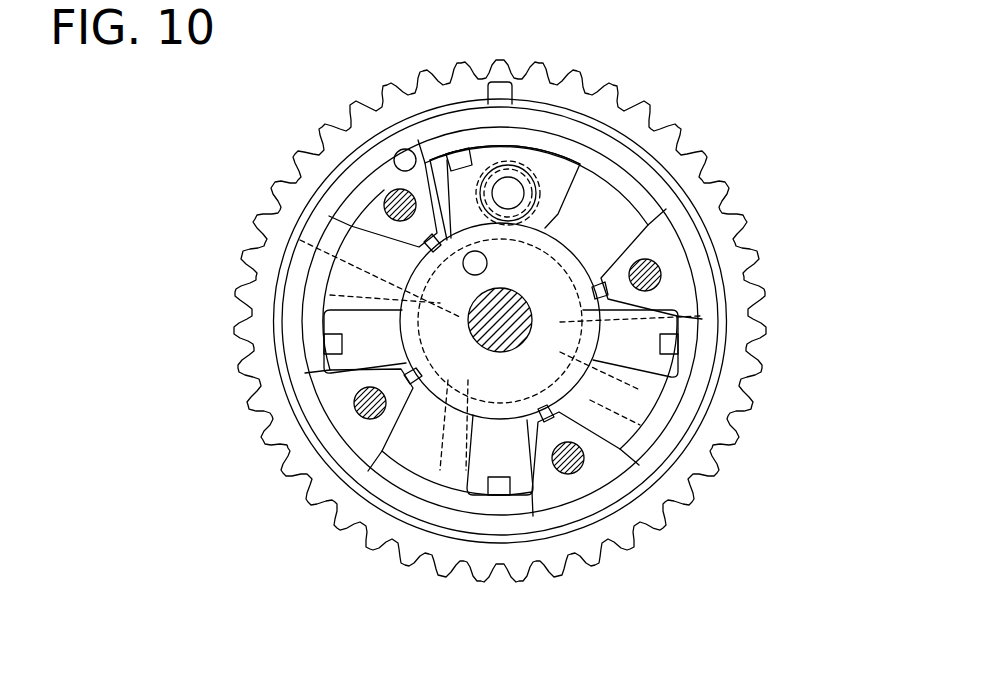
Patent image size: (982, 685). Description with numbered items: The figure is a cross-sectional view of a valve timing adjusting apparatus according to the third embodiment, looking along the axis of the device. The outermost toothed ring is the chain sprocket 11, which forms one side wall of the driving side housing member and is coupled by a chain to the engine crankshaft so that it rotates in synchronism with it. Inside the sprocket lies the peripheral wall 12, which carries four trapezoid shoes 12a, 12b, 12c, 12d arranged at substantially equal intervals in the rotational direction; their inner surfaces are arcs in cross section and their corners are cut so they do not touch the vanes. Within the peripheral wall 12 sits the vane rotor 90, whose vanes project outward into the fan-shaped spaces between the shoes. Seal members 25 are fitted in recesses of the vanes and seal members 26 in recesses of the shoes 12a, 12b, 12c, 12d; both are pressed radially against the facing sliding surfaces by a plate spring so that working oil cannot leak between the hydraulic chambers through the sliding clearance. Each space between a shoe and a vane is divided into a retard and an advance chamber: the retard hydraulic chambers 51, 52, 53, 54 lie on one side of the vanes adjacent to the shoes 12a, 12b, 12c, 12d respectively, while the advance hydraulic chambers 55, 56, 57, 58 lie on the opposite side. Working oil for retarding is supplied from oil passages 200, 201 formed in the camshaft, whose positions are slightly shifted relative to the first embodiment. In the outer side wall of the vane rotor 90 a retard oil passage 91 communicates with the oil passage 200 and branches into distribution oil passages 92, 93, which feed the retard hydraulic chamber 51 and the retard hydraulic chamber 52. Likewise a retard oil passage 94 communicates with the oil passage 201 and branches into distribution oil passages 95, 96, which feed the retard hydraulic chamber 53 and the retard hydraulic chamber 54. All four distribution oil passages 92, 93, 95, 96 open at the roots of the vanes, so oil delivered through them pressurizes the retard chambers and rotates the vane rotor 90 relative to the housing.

The chain sprocket 11 is at (700, 160).
The peripheral wall 12 is at (640, 310).
The shoe 12a is at (672, 312).
The shoe 12b is at (545, 430).
The shoe 12c is at (415, 460).
The shoe 12d is at (440, 238).
The seal member 25 is at (437, 240).
The seal member 26 is at (432, 240).
The retard hydraulic chamber 51 is at (643, 180).
The retard hydraulic chamber 52 is at (620, 432).
The retard hydraulic chamber 53 is at (420, 456).
The retard hydraulic chamber 54 is at (360, 245).
The advance hydraulic chamber 55 is at (460, 156).
The advance hydraulic chamber 56 is at (662, 286).
The advance hydraulic chamber 57 is at (572, 462).
The advance hydraulic chamber 58 is at (370, 402).
The vane rotor 90 is at (600, 215).
The retard oil passage 91 is at (640, 390).
The distribution oil passage 92 is at (545, 205).
The distribution oil passage 93 is at (640, 425).
The retard oil passage 94 is at (440, 470).
The distribution oil passage 95 is at (466, 470).
The distribution oil passage 96 is at (300, 240).
The oil passage 200 is at (700, 316).
The oil passage 201 is at (330, 295).